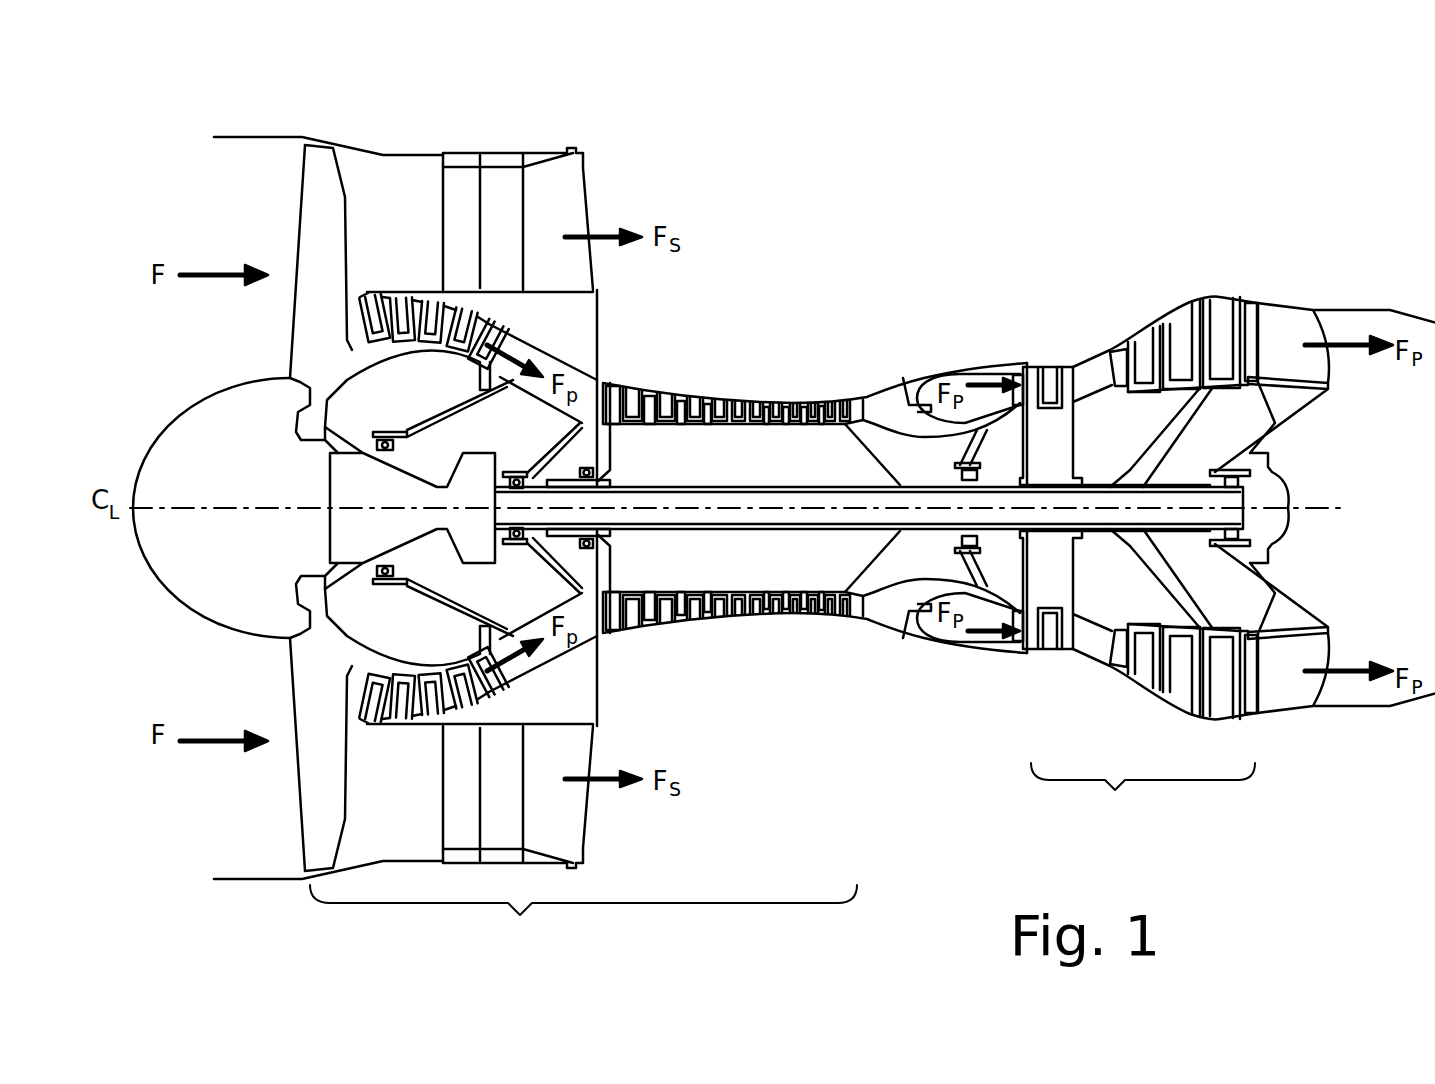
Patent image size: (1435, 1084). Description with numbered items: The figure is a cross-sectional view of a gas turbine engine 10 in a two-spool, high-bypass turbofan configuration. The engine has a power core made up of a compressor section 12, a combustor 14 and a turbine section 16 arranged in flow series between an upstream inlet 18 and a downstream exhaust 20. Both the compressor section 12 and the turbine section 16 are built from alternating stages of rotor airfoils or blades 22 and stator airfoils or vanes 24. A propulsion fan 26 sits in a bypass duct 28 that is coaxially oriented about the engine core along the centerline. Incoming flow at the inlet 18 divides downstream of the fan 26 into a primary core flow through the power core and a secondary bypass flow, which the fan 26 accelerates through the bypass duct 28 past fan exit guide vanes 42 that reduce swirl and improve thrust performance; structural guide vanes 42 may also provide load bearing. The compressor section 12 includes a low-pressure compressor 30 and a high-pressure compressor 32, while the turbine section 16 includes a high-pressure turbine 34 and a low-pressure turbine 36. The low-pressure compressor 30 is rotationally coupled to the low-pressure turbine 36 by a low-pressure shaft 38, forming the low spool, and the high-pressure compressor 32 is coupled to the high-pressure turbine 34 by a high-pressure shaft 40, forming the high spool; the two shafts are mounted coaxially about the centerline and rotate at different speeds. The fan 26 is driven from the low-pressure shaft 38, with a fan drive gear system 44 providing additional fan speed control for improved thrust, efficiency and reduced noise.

The gas turbine engine 10 is at (176, 107).
The compressor section 12 is at (535, 543).
The combustor 14 is at (967, 367).
The turbine section 16 is at (1143, 654).
The upstream inlet 18 is at (170, 376).
The downstream exhaust 20 is at (1345, 451).
The rotor airfoils (blades) 22 is at (652, 398).
The stator airfoils (vanes) 24 is at (696, 398).
The propulsion fan 26 is at (315, 232).
The bypass duct 28 is at (385, 233).
The low-pressure compressor 30 is at (545, 682).
The high-pressure compressor 32 is at (745, 630).
The high-pressure turbine 34 is at (1055, 662).
The low-pressure turbine 36 is at (1133, 707).
The low-pressure shaft 38 is at (785, 530).
The high-pressure shaft 40 is at (868, 532).
The fan exit guide vanes 42 is at (458, 175).
The fan drive gear system 44 is at (480, 455).